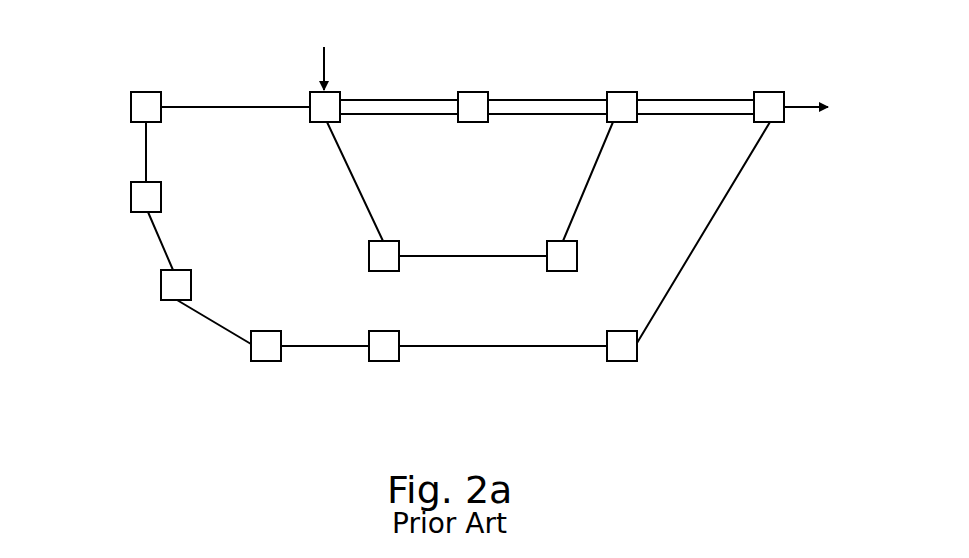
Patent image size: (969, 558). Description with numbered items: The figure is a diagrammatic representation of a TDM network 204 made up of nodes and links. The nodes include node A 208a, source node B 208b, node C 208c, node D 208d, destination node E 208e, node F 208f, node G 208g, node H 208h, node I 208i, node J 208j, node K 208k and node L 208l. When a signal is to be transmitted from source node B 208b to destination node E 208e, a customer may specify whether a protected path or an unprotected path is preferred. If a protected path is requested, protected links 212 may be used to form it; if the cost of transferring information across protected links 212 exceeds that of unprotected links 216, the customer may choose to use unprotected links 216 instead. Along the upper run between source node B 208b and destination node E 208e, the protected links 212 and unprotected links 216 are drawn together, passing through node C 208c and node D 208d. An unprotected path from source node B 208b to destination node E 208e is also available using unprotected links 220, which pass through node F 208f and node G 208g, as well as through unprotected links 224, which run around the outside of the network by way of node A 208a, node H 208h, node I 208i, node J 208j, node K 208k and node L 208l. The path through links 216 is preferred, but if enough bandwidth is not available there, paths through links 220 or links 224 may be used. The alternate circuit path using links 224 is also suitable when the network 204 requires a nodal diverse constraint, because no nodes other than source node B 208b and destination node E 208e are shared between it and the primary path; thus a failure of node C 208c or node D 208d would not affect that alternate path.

The TDM network 204 is at (118, 50).
The node A 208a is at (148, 92).
The source node B 208b is at (330, 92).
The node C 208c is at (472, 92).
The node D 208d is at (622, 92).
The destination node E 208e is at (770, 92).
The node F 208f is at (386, 241).
The node G 208g is at (568, 241).
The node H 208h is at (152, 182).
The node I 208i is at (180, 270).
The node J 208j is at (266, 361).
The node K 208k is at (385, 361).
The node L 208l is at (623, 361).
The protected links 212 is at (425, 116).
The unprotected links 216 is at (408, 100).
The unprotected links 220 is at (372, 208).
The unprotected links 224 is at (148, 132).